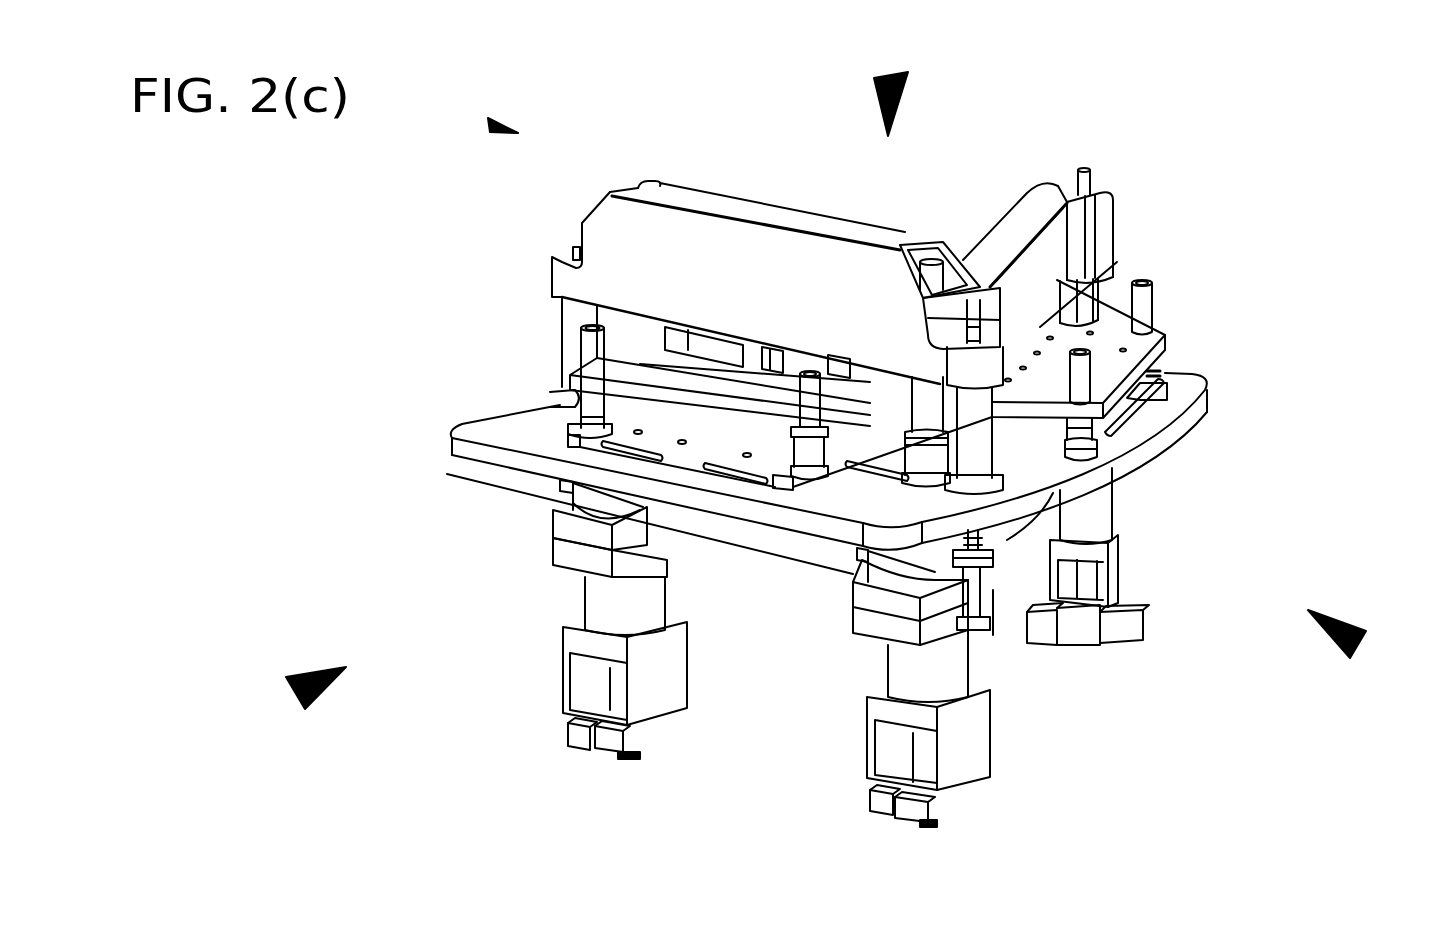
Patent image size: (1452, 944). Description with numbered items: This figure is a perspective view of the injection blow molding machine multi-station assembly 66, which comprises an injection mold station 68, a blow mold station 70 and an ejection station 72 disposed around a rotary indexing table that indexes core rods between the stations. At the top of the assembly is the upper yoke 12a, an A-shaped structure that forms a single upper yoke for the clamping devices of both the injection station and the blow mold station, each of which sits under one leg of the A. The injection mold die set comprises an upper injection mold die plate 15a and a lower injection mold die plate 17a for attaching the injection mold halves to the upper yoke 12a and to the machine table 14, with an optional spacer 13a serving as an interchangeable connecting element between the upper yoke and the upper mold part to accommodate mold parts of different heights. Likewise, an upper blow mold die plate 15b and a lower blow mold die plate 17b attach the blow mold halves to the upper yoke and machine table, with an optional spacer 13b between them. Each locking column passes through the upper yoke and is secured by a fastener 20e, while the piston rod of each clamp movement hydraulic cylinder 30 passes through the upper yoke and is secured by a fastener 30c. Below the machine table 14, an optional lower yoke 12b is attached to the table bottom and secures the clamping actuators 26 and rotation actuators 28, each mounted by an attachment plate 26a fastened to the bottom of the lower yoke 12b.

The upper yoke 12a is at (1013, 237).
The lower yoke 12b is at (723, 540).
The spacer 13a is at (640, 343).
The spacer 13b is at (1110, 327).
The machine table 14 is at (1153, 455).
The upper injection mold die plate 15a is at (627, 394).
The upper blow mold die plate 15b is at (1120, 350).
The lower injection mold die plate 17a is at (610, 464).
The lower blow mold die plate 17b is at (1163, 397).
The fastener 20e is at (935, 258).
The clamping actuator 26 is at (620, 602).
The attachment plate 26a is at (570, 557).
The rotation actuator 28 is at (623, 693).
The hydraulic cylinder 30 is at (977, 592).
The fastener 30c is at (1089, 176).
The multi-station assembly 66 is at (492, 125).
The injection mold station 68 is at (293, 698).
The blow mold station 70 is at (1366, 647).
The ejection station 72 is at (891, 76).